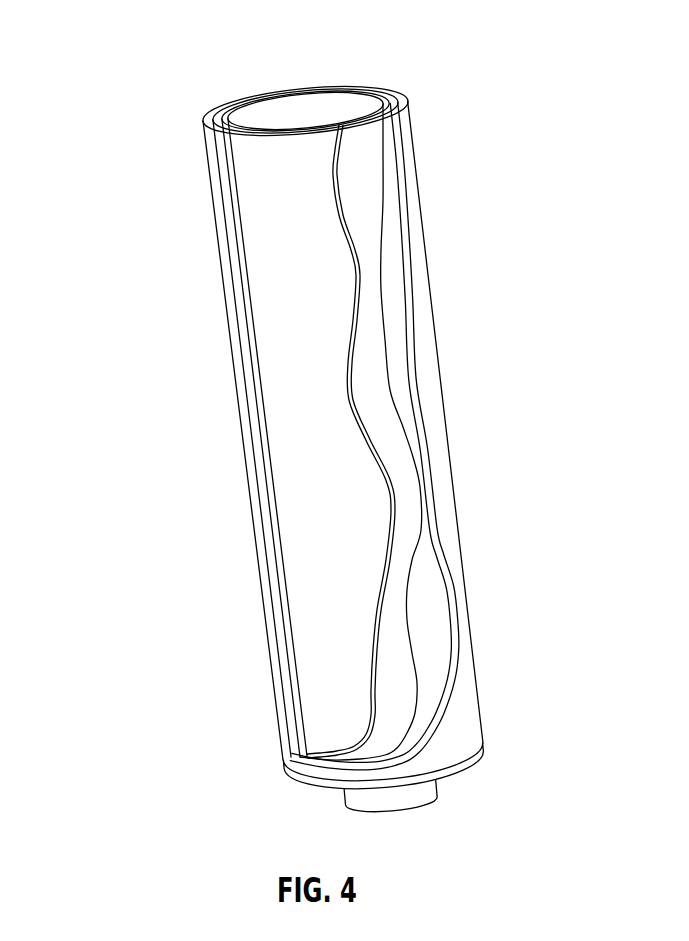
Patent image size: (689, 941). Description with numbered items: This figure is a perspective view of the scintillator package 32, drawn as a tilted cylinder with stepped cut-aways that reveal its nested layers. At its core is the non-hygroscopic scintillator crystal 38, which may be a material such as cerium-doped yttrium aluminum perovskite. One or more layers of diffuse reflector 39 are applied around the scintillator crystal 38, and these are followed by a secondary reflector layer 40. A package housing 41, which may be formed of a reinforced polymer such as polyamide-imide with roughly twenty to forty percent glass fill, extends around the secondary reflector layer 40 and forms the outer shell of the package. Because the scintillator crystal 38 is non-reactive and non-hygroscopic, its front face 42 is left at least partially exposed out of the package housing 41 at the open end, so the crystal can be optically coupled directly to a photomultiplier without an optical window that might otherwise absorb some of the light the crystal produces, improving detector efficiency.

The scintillator package 32 is at (127, 35).
The non-hygroscopic scintillator crystal 38 is at (318, 208).
The diffuse reflector 39 is at (370, 393).
The secondary reflector layer 40 is at (433, 620).
The package housing 41 is at (230, 408).
The front face 42 is at (303, 97).